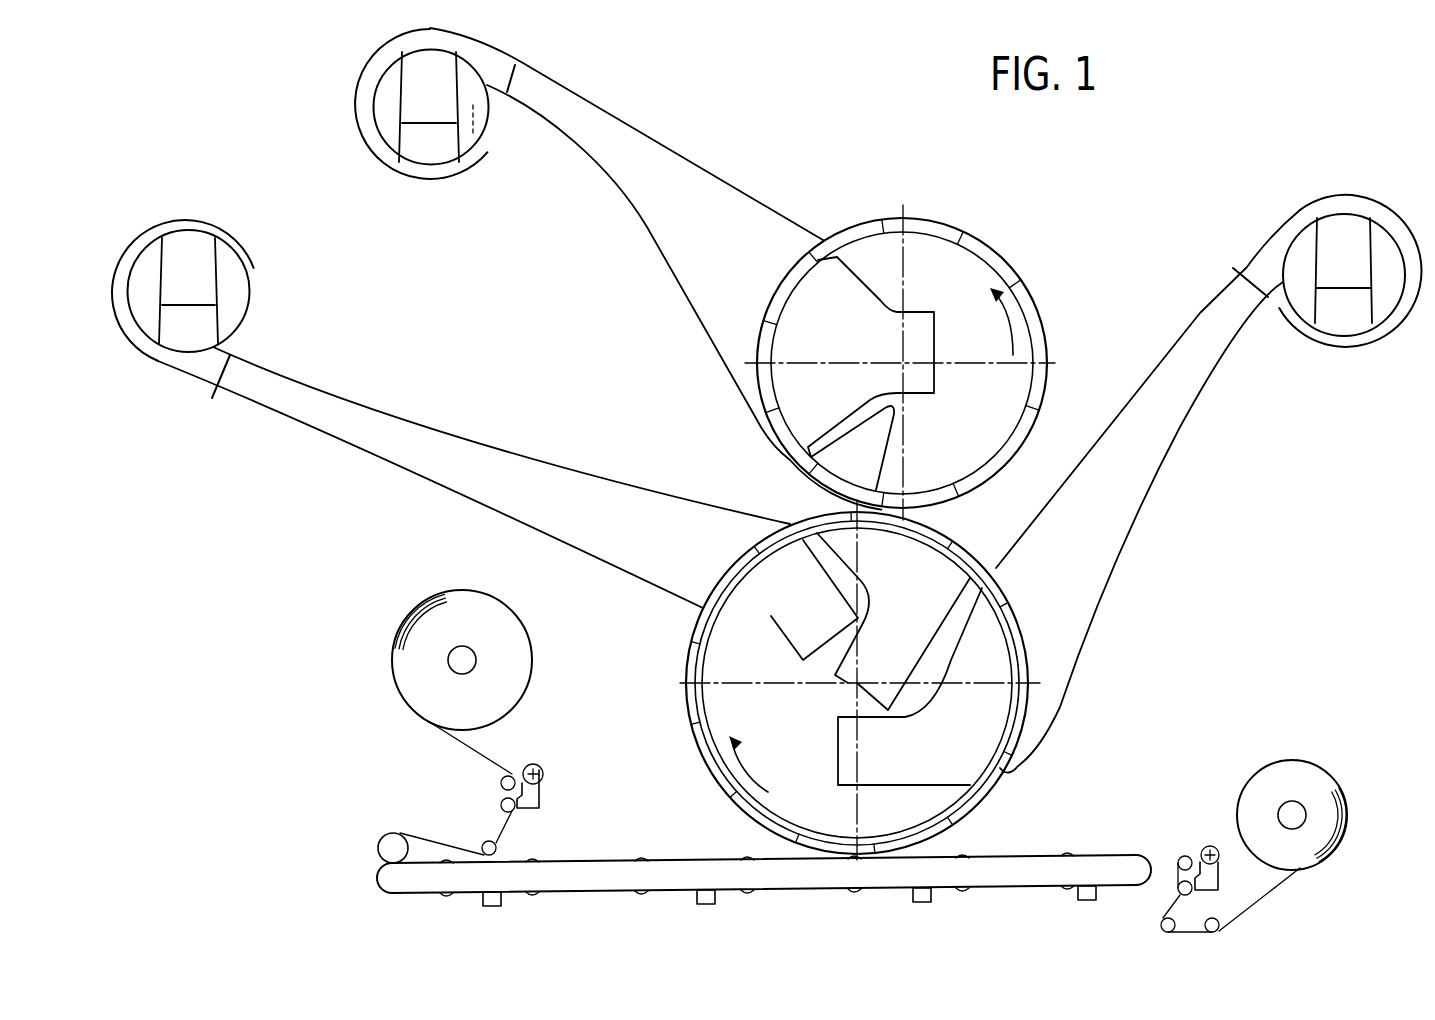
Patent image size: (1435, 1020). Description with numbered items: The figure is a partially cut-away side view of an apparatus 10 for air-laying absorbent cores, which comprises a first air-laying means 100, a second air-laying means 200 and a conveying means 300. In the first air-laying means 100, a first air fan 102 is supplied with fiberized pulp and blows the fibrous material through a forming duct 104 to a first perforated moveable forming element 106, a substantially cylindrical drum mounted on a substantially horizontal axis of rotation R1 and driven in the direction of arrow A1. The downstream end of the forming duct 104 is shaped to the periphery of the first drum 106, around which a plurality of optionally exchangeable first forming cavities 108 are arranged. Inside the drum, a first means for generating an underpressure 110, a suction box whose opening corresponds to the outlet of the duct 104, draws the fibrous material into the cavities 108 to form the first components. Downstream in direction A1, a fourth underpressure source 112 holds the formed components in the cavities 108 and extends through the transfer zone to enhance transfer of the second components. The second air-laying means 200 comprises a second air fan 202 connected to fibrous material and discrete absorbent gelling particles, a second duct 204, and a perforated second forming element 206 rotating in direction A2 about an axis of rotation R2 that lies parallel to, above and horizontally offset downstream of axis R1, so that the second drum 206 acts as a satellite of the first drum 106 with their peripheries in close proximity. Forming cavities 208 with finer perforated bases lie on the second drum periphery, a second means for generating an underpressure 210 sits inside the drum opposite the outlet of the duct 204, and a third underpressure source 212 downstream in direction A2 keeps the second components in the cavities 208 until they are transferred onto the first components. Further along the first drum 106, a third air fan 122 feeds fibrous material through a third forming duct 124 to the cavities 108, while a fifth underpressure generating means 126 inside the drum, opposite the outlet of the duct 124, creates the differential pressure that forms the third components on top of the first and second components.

The apparatus 10 is at (919, 150).
The first air-laying means 100 is at (747, 498).
The first air fan 102 is at (230, 278).
The forming duct 104 is at (461, 457).
The first perforated moveable forming element 106 is at (701, 716).
The first forming cavities 108 is at (701, 622).
The first means for generating an underpressure 110 is at (779, 606).
The fourth underpressure source 112 is at (845, 680).
The third air fan 122 is at (1345, 318).
The third forming duct 124 is at (1090, 574).
The fifth underpressure generating means 126 is at (912, 766).
The second air-laying means 200 is at (1020, 272).
The second air fan 202 is at (383, 113).
The second duct 204 is at (696, 193).
The second forming element 206 is at (1008, 406).
The forming cavities 208 is at (863, 234).
The second means for generating an underpressure 210 is at (845, 294).
The third underpressure source 212 is at (878, 433).
The conveying means 300 is at (797, 878).
The axis of rotation R1 is at (866, 665).
The axis of rotation R2 is at (901, 361).
The direction of rotation A1 is at (768, 788).
The direction of rotation A2 is at (1013, 335).